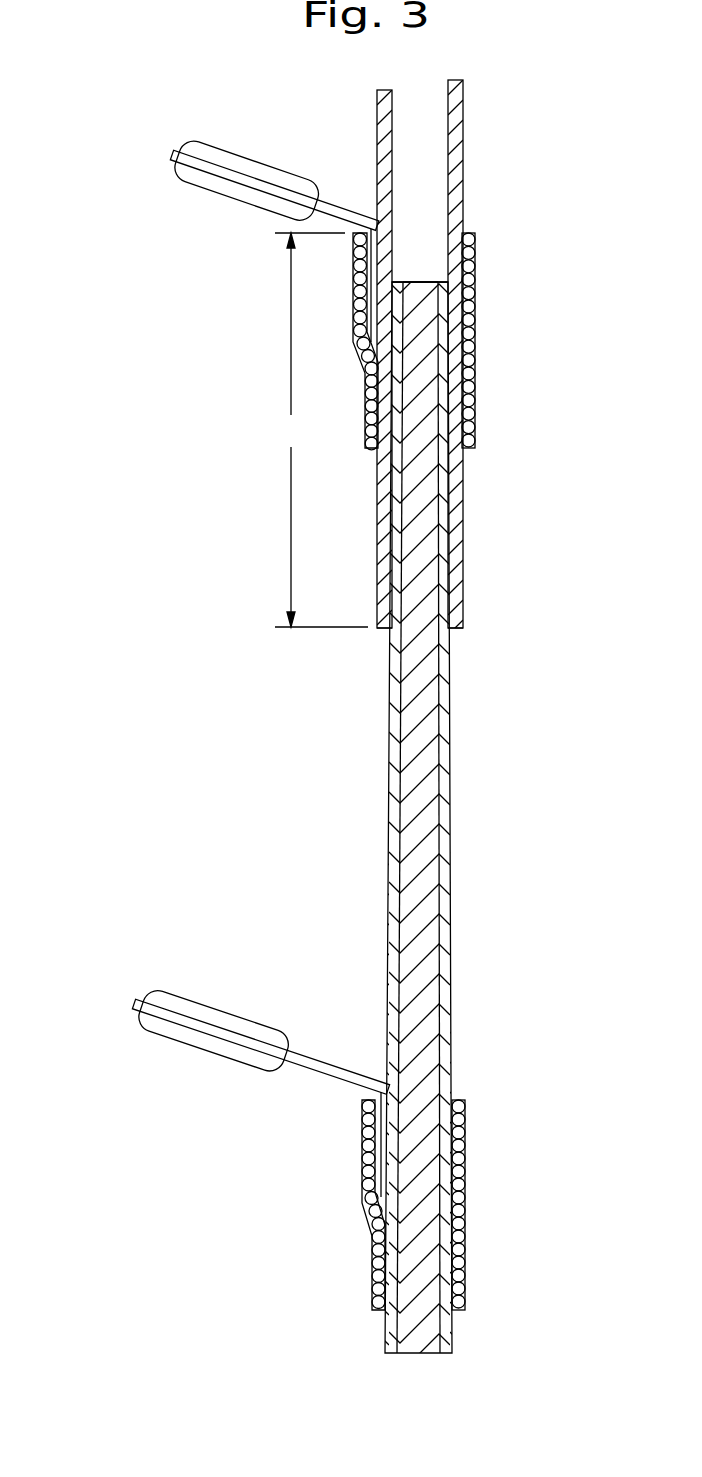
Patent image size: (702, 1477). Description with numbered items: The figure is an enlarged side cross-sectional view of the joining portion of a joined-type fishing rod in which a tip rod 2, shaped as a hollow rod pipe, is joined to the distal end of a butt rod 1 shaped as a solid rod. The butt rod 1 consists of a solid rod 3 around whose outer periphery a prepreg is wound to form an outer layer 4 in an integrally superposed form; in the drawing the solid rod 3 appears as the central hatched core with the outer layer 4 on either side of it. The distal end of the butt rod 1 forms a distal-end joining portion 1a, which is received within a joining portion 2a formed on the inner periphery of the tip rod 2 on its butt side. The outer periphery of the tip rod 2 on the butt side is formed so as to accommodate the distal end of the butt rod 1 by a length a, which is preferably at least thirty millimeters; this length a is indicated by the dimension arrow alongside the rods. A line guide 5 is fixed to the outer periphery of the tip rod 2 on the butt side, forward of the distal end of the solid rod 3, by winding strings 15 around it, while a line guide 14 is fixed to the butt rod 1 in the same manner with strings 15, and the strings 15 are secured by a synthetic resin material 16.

The butt rod 1 is at (477, 819).
The distal-end joining portion 1a is at (465, 303).
The tip rod 2 is at (478, 132).
The joining portion 2a is at (445, 628).
The solid rod 3 is at (430, 1005).
The outer layer 4 is at (447, 952).
The line guide 5 is at (170, 153).
The line guide 14 is at (133, 1000).
The strings 15 is at (470, 250).
The synthetic resin material 16 is at (470, 385).
The length a is at (321, 430).